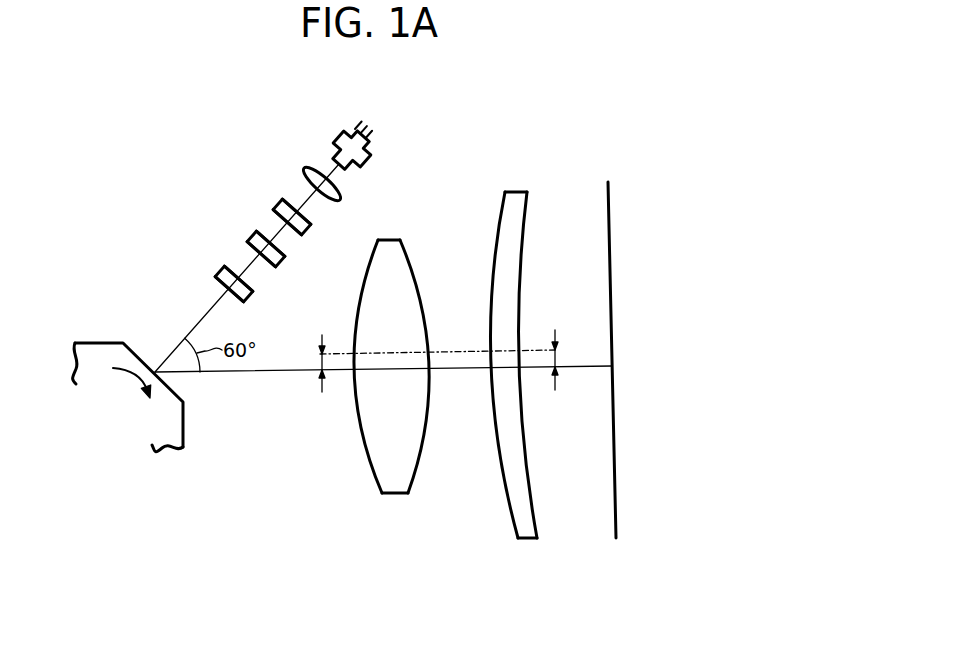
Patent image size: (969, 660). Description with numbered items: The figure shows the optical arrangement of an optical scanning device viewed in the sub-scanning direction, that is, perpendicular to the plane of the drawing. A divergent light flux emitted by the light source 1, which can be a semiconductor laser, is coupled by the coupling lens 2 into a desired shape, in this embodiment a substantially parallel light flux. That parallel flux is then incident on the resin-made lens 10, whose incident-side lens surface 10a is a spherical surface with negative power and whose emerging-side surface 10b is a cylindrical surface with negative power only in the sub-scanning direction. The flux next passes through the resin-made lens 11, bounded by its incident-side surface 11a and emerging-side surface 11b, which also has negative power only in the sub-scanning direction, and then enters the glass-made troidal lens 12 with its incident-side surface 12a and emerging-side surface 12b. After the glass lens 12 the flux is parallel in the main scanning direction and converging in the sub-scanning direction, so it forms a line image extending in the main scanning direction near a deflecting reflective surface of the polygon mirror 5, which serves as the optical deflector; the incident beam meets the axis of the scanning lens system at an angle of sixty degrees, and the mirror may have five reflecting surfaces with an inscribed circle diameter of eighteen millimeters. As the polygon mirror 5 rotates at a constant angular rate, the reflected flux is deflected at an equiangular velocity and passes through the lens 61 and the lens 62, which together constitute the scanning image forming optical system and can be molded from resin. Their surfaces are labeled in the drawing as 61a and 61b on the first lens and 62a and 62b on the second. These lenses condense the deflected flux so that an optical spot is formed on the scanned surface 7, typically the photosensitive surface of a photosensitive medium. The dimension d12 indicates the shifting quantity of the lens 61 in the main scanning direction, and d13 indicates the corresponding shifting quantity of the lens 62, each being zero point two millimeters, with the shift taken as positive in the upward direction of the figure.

The light source 1 is at (344, 129).
The coupling lens 2 is at (310, 167).
The polygon mirror 5 is at (103, 345).
The scanned surface 7 is at (611, 202).
The resin-made lens 10 is at (283, 204).
The incident-side lens surface 10a is at (305, 216).
The emerging-side surface 10b is at (300, 238).
The resin-made lens 11 is at (259, 236).
The incident-side surface 11a is at (284, 254).
The emerging-side surface 11b is at (263, 275).
The glass-made troidal lens 12 is at (229, 270).
The incident-side surface 12a is at (248, 298).
The emerging-side surface 12b is at (243, 304).
The lens 61 is at (405, 252).
The incident surface of lens 61 61a is at (362, 450).
The exit surface of lens 61 61b is at (417, 450).
The lens 62 is at (523, 208).
The incident surface of lens 62 62a is at (503, 498).
The exit surface of lens 62 62b is at (531, 492).
The shifting quantity of the lens 61 d12 is at (320, 356).
The shifting quantity of the lens 62 d13 is at (557, 352).